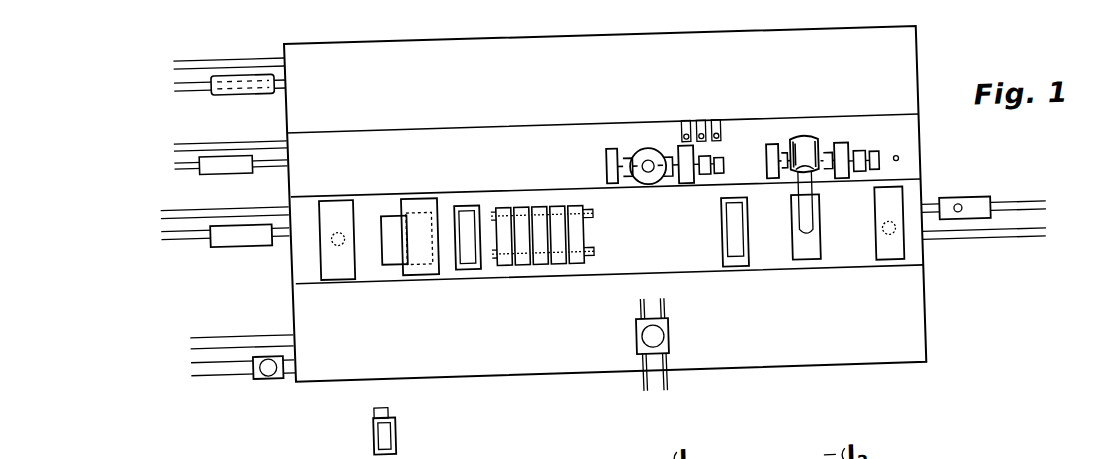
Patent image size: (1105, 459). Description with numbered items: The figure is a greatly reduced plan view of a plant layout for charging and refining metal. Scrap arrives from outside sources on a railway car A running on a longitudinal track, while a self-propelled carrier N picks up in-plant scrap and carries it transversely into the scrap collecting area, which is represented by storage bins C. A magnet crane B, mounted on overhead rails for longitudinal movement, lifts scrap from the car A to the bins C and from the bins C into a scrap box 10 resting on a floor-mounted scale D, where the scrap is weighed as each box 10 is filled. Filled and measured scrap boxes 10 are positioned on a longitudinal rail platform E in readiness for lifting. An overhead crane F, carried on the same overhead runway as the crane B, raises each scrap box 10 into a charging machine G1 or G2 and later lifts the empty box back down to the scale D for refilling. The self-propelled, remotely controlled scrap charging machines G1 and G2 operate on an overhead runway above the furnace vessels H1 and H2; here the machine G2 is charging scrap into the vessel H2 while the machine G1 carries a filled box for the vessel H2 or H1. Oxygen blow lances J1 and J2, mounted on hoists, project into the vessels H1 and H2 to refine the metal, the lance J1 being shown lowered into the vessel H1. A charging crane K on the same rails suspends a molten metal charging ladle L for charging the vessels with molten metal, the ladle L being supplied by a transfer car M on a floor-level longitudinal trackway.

The railway car A is at (241, 248).
The magnet crane B is at (336, 222).
The storage bins C is at (385, 269).
The floor-mounted scale D is at (466, 214).
The longitudinal rail platform E is at (558, 215).
The overhead crane F is at (420, 217).
The scrap charging machine G1 is at (738, 262).
The scrap charging machine G2 is at (808, 260).
The furnace vessel H1 is at (664, 137).
The furnace vessel H2 is at (822, 156).
The oxygen blow lance J1 is at (625, 132).
The oxygen blow lance J2 is at (890, 120).
The charging crane K is at (875, 244).
The molten metal charging ladle L is at (891, 262).
The transfer car M is at (964, 188).
The self-propelled carrier N is at (405, 430).
The scrap box 10 is at (658, 254).